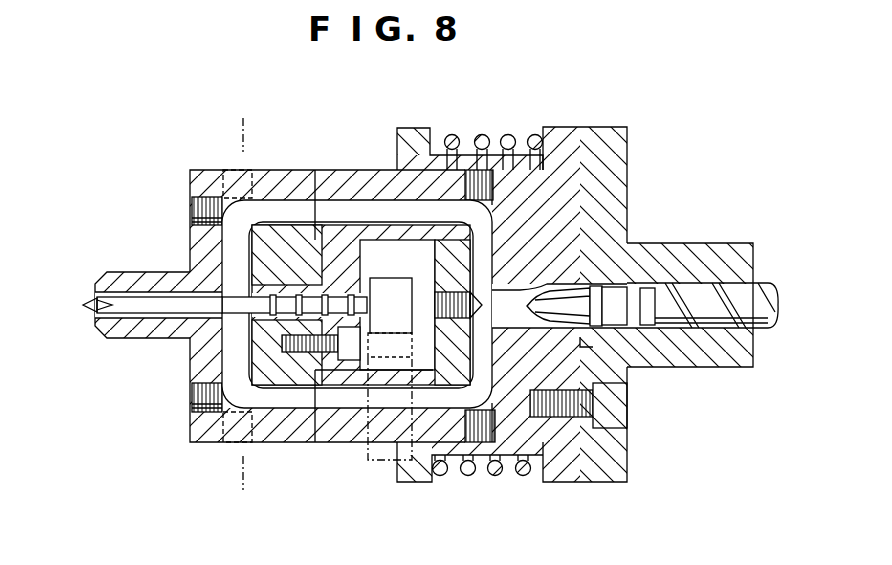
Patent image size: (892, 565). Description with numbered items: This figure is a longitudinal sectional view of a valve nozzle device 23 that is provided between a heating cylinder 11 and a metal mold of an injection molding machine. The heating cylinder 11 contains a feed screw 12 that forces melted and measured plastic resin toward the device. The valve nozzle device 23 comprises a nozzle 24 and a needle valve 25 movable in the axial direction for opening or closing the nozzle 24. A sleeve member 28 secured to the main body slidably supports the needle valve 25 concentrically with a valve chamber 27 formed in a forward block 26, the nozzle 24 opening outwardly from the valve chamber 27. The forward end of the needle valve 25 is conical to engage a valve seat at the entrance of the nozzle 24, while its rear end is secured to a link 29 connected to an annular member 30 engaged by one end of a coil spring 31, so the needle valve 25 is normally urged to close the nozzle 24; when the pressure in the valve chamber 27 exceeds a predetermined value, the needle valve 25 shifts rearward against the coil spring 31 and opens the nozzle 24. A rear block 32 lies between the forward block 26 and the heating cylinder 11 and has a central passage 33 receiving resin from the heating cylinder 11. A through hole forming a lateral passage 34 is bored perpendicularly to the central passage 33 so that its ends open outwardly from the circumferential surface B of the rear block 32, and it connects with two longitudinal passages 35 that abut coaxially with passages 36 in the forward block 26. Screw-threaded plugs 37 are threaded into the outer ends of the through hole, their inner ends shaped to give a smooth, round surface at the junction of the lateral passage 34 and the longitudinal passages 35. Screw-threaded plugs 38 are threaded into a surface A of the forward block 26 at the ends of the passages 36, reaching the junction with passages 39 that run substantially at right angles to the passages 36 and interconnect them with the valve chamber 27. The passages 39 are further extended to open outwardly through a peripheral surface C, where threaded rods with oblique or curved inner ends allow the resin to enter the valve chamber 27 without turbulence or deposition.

The heating cylinder 11 is at (687, 367).
The feed screw 12 is at (705, 290).
The valve nozzle device 23 is at (371, 460).
The nozzle 24 is at (84, 300).
The needle valve 25 is at (130, 310).
The forward block 26 is at (166, 330).
The valve chamber 27 is at (130, 290).
The sleeve member 28 is at (342, 253).
The link 29 is at (393, 290).
The annular member 30 is at (418, 130).
The coil spring 31 is at (511, 137).
The rear block 32 is at (570, 475).
The central passage 33 is at (508, 310).
The lateral passage 34 is at (478, 255).
The longitudinal passages 35 is at (390, 395).
The passages 36 is at (290, 400).
The screw-threaded plugs 37 is at (485, 456).
The screw-threaded plugs 38 is at (195, 400).
The passages 39 is at (228, 253).
The surface of the forward block A is at (188, 186).
The circumferential surface of the rear block B is at (369, 167).
The peripheral surface C is at (232, 167).